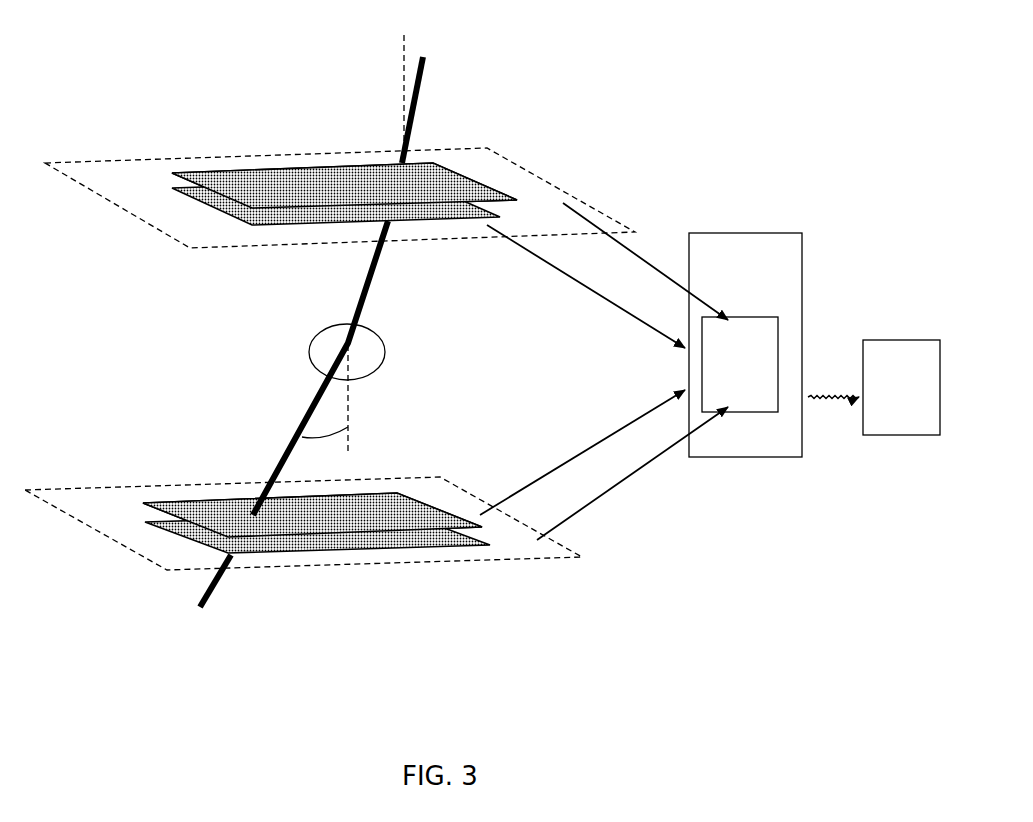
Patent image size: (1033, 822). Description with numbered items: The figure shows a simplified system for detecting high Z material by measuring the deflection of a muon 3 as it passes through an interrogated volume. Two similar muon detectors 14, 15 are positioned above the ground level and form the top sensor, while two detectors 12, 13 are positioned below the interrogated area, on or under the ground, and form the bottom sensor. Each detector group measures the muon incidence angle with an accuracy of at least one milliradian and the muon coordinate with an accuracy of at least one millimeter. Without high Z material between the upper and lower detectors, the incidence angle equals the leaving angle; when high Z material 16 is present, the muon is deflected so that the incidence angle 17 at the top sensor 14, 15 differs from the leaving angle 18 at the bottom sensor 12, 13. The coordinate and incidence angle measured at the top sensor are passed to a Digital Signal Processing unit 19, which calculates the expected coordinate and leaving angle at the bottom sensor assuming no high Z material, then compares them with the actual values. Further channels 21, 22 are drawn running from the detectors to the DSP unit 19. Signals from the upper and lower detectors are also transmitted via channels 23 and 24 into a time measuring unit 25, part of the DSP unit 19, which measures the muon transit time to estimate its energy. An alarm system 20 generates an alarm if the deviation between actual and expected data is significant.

The light beam 3 is at (328, 330).
The detector 12 is at (303, 511).
The detector 13 is at (317, 540).
The muon detector 14 is at (340, 197).
The muon detector 15 is at (336, 211).
The high Z material 16 is at (372, 352).
The incidence angle 17 is at (386, 97).
The leaving angle 18 is at (325, 413).
The Digital Signal Processing (DSP) unit 19 is at (745, 345).
The alarm system 20 is at (874, 387).
The reflected beam 21 is at (586, 286).
The reflected beam 22 is at (582, 452).
The channel 23 is at (632, 473).
The channel 24 is at (645, 261).
The time measuring unit 25 is at (740, 364).